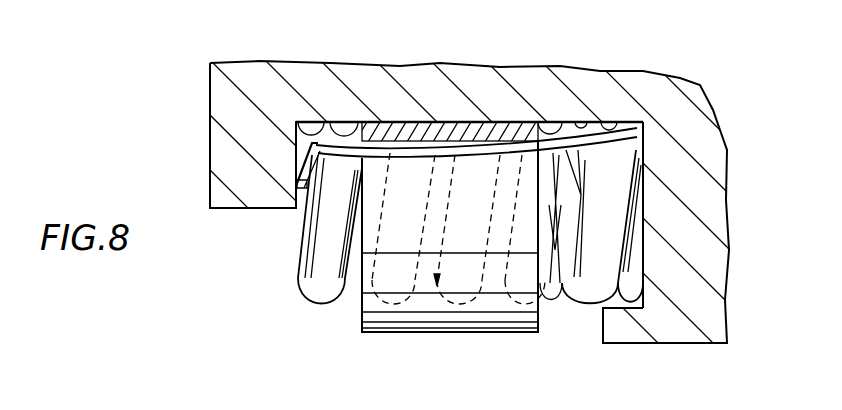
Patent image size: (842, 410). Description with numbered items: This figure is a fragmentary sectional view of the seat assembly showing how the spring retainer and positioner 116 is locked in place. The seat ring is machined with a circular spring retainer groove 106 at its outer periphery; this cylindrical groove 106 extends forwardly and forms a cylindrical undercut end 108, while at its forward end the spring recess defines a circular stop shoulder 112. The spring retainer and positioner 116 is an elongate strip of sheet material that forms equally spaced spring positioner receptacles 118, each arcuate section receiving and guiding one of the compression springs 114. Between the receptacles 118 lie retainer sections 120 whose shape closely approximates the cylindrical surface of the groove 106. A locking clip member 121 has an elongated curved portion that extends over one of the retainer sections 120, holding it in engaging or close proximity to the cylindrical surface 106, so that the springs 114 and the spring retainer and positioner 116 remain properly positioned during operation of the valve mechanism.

The spring retainer groove 106 is at (590, 122).
The cylindrical undercut end 108 is at (648, 243).
The stop shoulder 112 is at (300, 142).
The springs 114 is at (330, 292).
The spring retainer and positioner 116 is at (396, 341).
The spring positioner receptacles 118 is at (500, 333).
The retainer section 120 is at (453, 122).
The locking clip member 121 is at (387, 170).